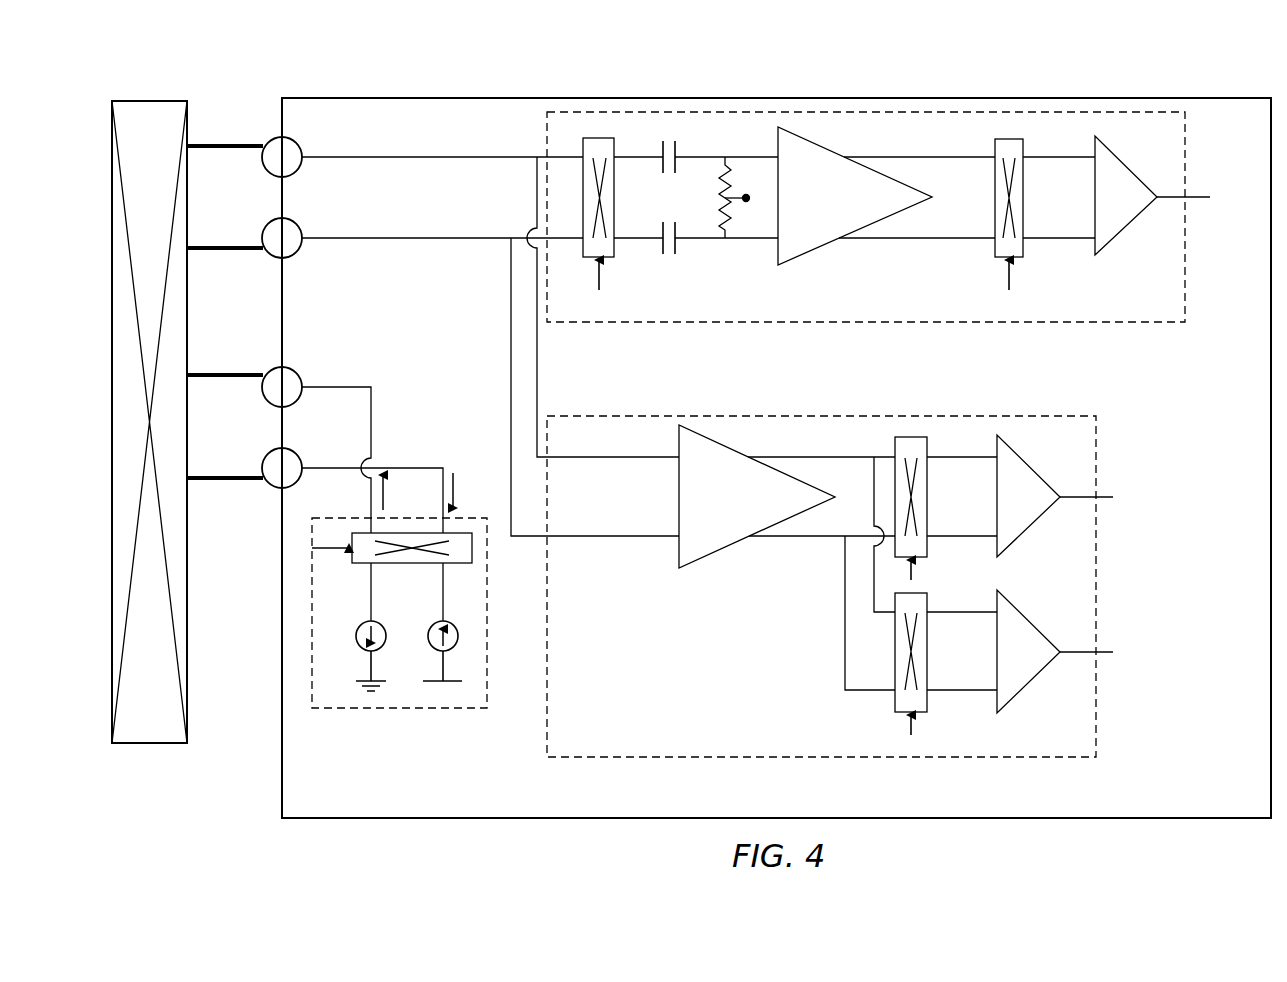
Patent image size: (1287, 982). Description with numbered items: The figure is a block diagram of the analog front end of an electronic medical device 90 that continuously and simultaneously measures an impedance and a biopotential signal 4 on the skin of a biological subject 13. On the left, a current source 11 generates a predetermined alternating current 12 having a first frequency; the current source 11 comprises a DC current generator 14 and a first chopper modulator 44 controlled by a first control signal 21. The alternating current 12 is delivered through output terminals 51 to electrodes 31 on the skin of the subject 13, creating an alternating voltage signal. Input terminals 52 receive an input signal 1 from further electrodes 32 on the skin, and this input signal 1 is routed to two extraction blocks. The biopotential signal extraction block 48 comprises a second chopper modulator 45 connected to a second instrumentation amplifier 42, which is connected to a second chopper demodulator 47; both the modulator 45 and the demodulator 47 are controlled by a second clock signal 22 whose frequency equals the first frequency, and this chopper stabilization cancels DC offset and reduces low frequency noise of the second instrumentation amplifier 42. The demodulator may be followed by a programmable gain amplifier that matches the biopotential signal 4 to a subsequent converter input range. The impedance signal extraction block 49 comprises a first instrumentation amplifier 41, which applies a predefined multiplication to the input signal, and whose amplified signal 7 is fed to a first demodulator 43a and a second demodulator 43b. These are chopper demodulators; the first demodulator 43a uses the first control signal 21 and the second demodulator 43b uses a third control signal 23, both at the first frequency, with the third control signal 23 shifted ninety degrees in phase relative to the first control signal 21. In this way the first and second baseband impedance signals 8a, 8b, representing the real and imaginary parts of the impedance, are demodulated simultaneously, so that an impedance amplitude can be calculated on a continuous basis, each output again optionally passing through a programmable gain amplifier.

The input signal 1 is at (376, 158).
The biopotential signal 4 is at (1172, 197).
The impedance signal wires 7 is at (848, 459).
The first baseband impedance signal 8a is at (1105, 499).
The second baseband impedance signal 8b is at (1103, 655).
The current source 11 is at (487, 645).
The alternating current 12 is at (453, 497).
The biological subject 13 is at (187, 645).
The DC current generator 14 is at (443, 620).
The first control signal 21 is at (333, 551).
The second clock signal 22 is at (602, 273).
The third control signal 23 is at (905, 730).
The electrodes 31 is at (233, 377).
The electrodes 32 is at (233, 148).
The first instrumentation amplifier 41 is at (712, 552).
The second instrumentation amplifier 42 is at (822, 247).
The first demodulator 43a is at (912, 437).
The second demodulator 43b is at (927, 700).
The first chopper modulator 44 is at (472, 548).
The second chopper modulator 45 is at (583, 150).
The second chopper demodulator 47 is at (1023, 142).
The biopotential signal extraction block 48 is at (1140, 322).
The impedance signal extraction block 49 is at (1096, 728).
The output terminals 51 is at (297, 373).
The input terminals 52 is at (297, 171).
The electronic medical device 90 is at (282, 778).